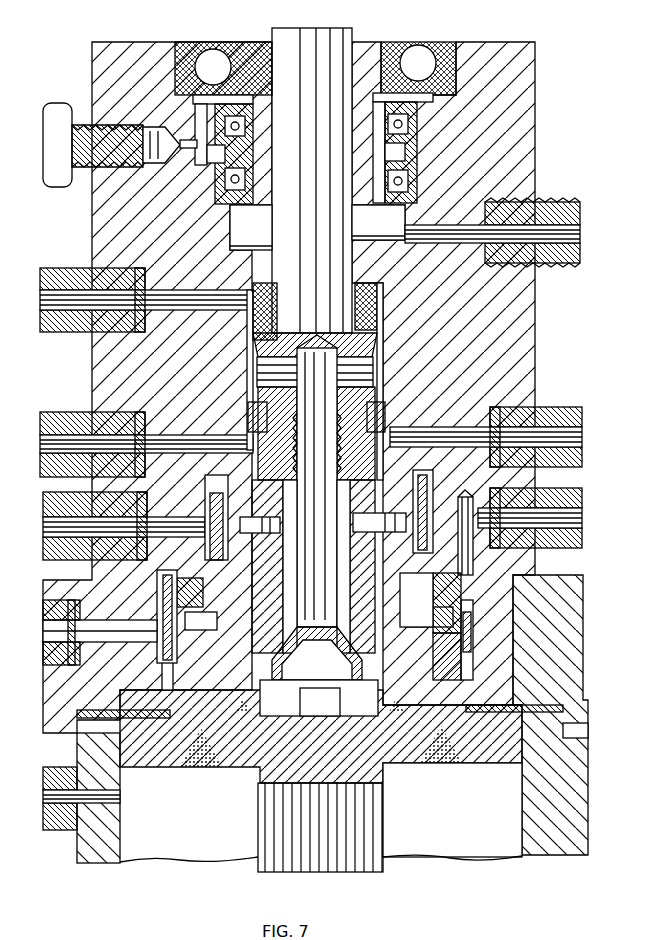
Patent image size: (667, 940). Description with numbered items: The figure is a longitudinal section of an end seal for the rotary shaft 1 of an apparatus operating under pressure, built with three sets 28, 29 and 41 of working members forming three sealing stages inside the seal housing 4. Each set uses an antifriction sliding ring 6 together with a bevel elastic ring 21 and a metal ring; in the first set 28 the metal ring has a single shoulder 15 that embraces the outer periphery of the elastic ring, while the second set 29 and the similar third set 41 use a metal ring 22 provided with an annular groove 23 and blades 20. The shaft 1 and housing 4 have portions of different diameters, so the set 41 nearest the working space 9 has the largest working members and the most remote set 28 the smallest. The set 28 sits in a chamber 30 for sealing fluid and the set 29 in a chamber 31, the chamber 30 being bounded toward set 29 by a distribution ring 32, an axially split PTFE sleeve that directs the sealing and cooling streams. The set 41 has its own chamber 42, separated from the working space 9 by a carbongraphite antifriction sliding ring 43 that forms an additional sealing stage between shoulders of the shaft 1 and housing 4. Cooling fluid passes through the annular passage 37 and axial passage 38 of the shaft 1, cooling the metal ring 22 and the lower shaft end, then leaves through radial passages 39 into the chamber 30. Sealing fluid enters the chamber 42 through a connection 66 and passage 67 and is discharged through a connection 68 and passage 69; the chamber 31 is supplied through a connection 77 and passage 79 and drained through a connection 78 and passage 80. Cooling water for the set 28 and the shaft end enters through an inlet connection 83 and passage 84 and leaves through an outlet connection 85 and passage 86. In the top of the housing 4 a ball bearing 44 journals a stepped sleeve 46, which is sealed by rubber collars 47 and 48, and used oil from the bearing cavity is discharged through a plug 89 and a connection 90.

The rotary shaft 1 is at (253, 828).
The housing 4 is at (84, 387).
The antifriction sliding ring 6 is at (368, 287).
The working space 9 is at (476, 855).
The shoulder 15 is at (362, 313).
The blades 20 is at (163, 597).
The bevel elastic ring 21 is at (245, 553).
The metal ring 22 is at (204, 490).
The annular groove 23 is at (287, 525).
The set of working members 28 is at (378, 317).
The set of working members 29 is at (437, 495).
The chamber 30 is at (378, 354).
The chamber 31 is at (207, 570).
The distribution ring 32 is at (380, 406).
The annular passage 37 is at (283, 587).
The axial passage 38 is at (317, 487).
The radial passages 39 is at (277, 370).
The set of working members 41 is at (481, 632).
The chamber 42 is at (476, 666).
The antifriction sliding ring 43 is at (320, 718).
The ball bearing 44 is at (419, 50).
The sleeve 46 is at (356, 163).
The rubber collar 47 is at (317, 227).
The rubber collar 48 is at (356, 129).
The connection 66 is at (580, 489).
The passage 67 is at (537, 710).
The connection 68 is at (50, 666).
The passage 69 is at (62, 635).
The connection 77 is at (566, 407).
The connection 78 is at (43, 555).
The passage 79 is at (458, 428).
The passage 80 is at (217, 509).
The inlet connection 83 is at (42, 427).
The passage 84 is at (189, 435).
The outlet connection 85 is at (50, 268).
The passage 86 is at (250, 287).
The plug 89 is at (52, 141).
The connection 90 is at (576, 214).